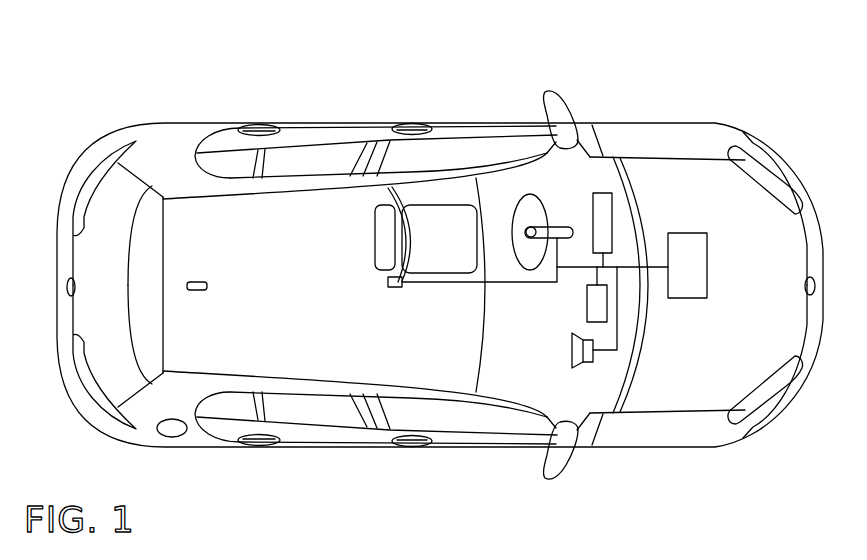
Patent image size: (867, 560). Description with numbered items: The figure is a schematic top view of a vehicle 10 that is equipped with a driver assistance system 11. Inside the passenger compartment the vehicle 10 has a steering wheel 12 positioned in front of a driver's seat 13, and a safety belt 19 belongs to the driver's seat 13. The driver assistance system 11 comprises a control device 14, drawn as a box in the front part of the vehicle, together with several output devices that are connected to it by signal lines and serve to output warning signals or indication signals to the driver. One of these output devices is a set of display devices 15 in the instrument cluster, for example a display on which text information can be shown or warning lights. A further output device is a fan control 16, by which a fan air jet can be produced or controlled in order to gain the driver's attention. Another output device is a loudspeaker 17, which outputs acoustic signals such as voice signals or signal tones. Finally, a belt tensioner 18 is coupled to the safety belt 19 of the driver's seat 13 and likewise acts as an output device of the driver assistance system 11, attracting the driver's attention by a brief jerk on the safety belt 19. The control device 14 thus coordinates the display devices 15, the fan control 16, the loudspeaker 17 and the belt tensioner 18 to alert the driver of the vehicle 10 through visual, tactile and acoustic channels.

The vehicle 10 is at (675, 81).
The driver assistance system 11 is at (681, 338).
The steering wheel 12 is at (523, 193).
The driver's seat 13 is at (450, 270).
The control device 14 is at (705, 272).
The display devices 15 is at (612, 218).
The fan control 16 is at (587, 302).
The loudspeaker 17 is at (570, 355).
The belt tensioner 18 is at (387, 285).
The safety belt 19 is at (393, 197).